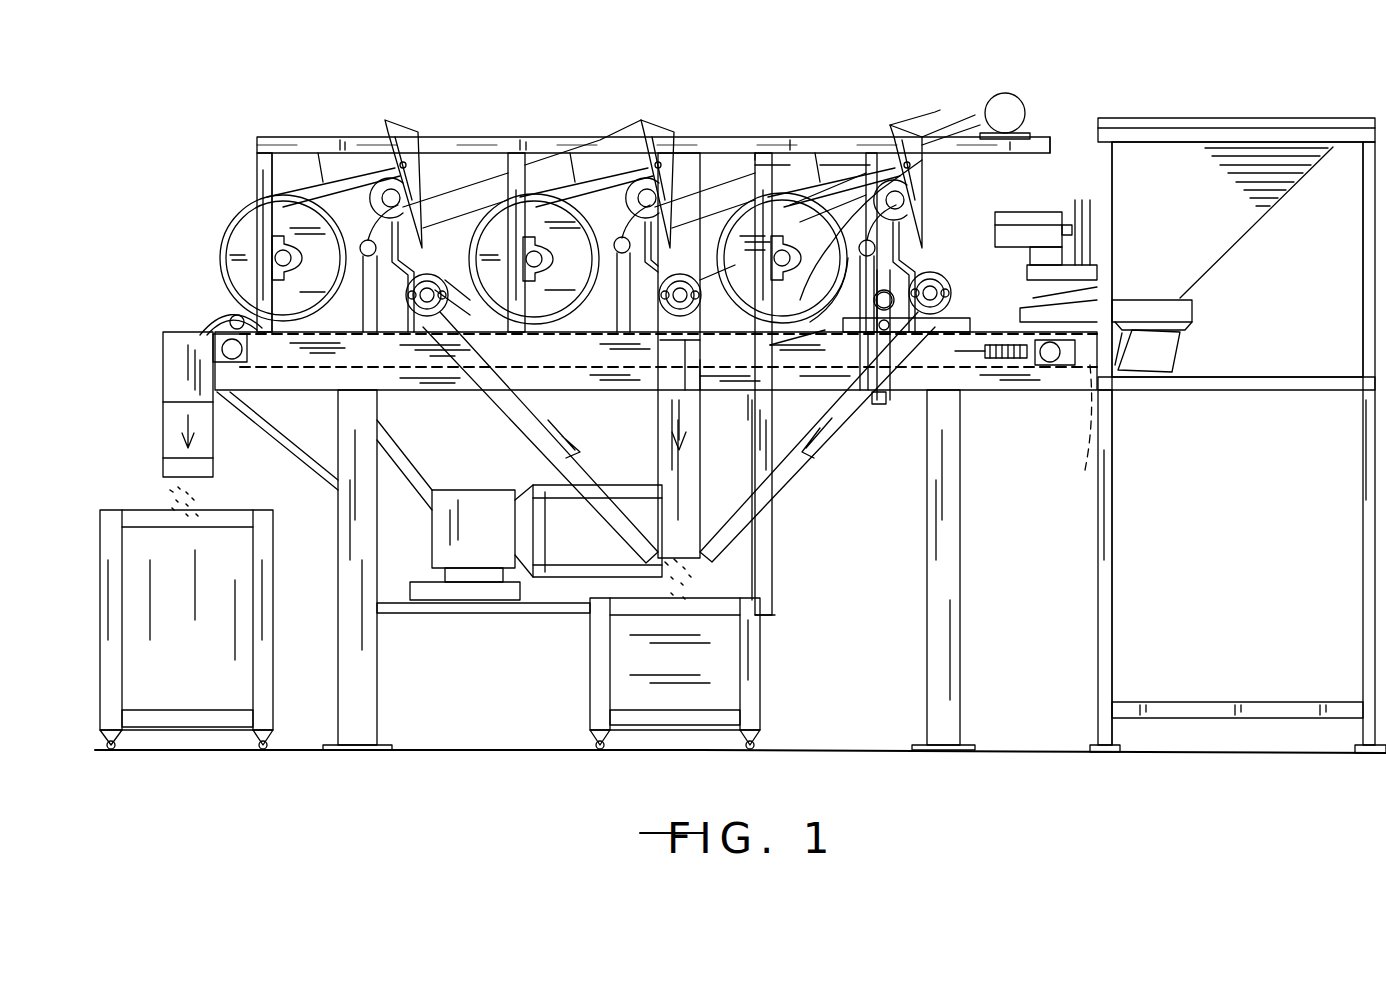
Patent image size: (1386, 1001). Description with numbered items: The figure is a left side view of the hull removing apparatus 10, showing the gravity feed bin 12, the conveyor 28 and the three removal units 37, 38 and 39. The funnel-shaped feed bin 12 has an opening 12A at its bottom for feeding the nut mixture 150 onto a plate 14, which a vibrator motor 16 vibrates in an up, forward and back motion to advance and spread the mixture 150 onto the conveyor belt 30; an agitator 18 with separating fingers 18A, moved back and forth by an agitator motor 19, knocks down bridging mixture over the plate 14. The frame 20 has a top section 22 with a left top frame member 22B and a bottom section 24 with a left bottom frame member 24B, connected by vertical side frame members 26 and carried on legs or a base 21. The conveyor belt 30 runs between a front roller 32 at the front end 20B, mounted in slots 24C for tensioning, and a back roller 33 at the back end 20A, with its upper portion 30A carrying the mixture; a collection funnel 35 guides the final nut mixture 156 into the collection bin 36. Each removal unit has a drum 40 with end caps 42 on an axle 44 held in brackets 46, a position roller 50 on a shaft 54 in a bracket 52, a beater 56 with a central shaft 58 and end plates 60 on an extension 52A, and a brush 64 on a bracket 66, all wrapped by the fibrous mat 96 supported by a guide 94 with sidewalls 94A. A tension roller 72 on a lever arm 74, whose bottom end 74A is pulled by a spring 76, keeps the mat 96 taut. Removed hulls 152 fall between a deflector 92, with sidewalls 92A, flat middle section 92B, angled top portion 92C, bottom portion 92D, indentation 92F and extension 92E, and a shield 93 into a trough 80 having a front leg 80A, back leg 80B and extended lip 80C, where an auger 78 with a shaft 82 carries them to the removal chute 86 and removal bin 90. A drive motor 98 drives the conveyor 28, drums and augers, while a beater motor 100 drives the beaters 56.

The hull removing apparatus 10 is at (664, 44).
The gravity feed bin 12 is at (1195, 118).
The opening 12A is at (1190, 293).
The plate 14 is at (1192, 318).
The vibrator motor 16 is at (1170, 352).
The agitator 18 is at (1092, 235).
The separating fingers 18A is at (1108, 278).
The agitator motor 19 is at (1060, 230).
The frame 20 is at (325, 137).
The back end 20A is at (268, 137).
The front end 20B is at (1040, 137).
The legs or base 21 is at (962, 570).
The top section 22 is at (300, 150).
The left top frame member 22B is at (500, 140).
The bottom section 24 is at (1028, 390).
The left bottom frame member 24B is at (928, 480).
The slots 24C is at (1100, 422).
The vertical side frame members 26 is at (775, 160).
The conveyor 28 is at (230, 325).
The conveyor belt 30 is at (1085, 445).
The upper portion 30A is at (222, 325).
The front roller 32 is at (1048, 372).
The back roller 33 is at (215, 352).
The collection funnel 35 is at (180, 372).
The collection bin 36 is at (240, 515).
The removal unit 37 is at (860, 137).
The removal unit 38 is at (572, 130).
The removal unit 39 is at (385, 125).
The drum 40 is at (738, 135).
The end caps 42 is at (718, 245).
The axle 44 is at (695, 288).
The brackets 46 is at (775, 280).
The position roller 50 is at (935, 120).
The bracket 52 is at (658, 150).
The extension 52A is at (905, 205).
The shaft 54 is at (930, 125).
The beater 56 is at (868, 232).
The central shaft 58 is at (920, 190).
The end plate 60 is at (848, 243).
The brush 64 is at (792, 260).
The bracket 66 is at (935, 100).
The tension roller 72 is at (850, 290).
The lever arm 74 is at (893, 415).
The bottom end 74A is at (862, 400).
The spring 76 is at (800, 337).
The auger 78 is at (925, 270).
The trough 80 is at (915, 385).
The front leg 80A is at (950, 296).
The back leg 80B is at (800, 347).
The extended lip 80C is at (712, 300).
The shaft 82 is at (942, 283).
The removal chute 86 is at (768, 490).
The removal bin 90 is at (765, 640).
The deflector 92 is at (920, 220).
The sidewalls 92A is at (678, 162).
The flat middle section 92B is at (443, 165).
The angled top portion 92C is at (652, 135).
The bottom portion 92D is at (425, 217).
The extension 92E is at (465, 332).
The indentation 92F is at (405, 205).
The shield 93 is at (628, 232).
The guide 94 is at (833, 130).
The sidewalls 94A is at (866, 150).
The fibrous mat 96 is at (748, 180).
The drive motor 98 is at (465, 500).
The beater motor 100 is at (1012, 95).
The nut mixture 150 is at (1097, 290).
The removed hulls 152 is at (700, 585).
The final nut mixture 156 is at (170, 495).